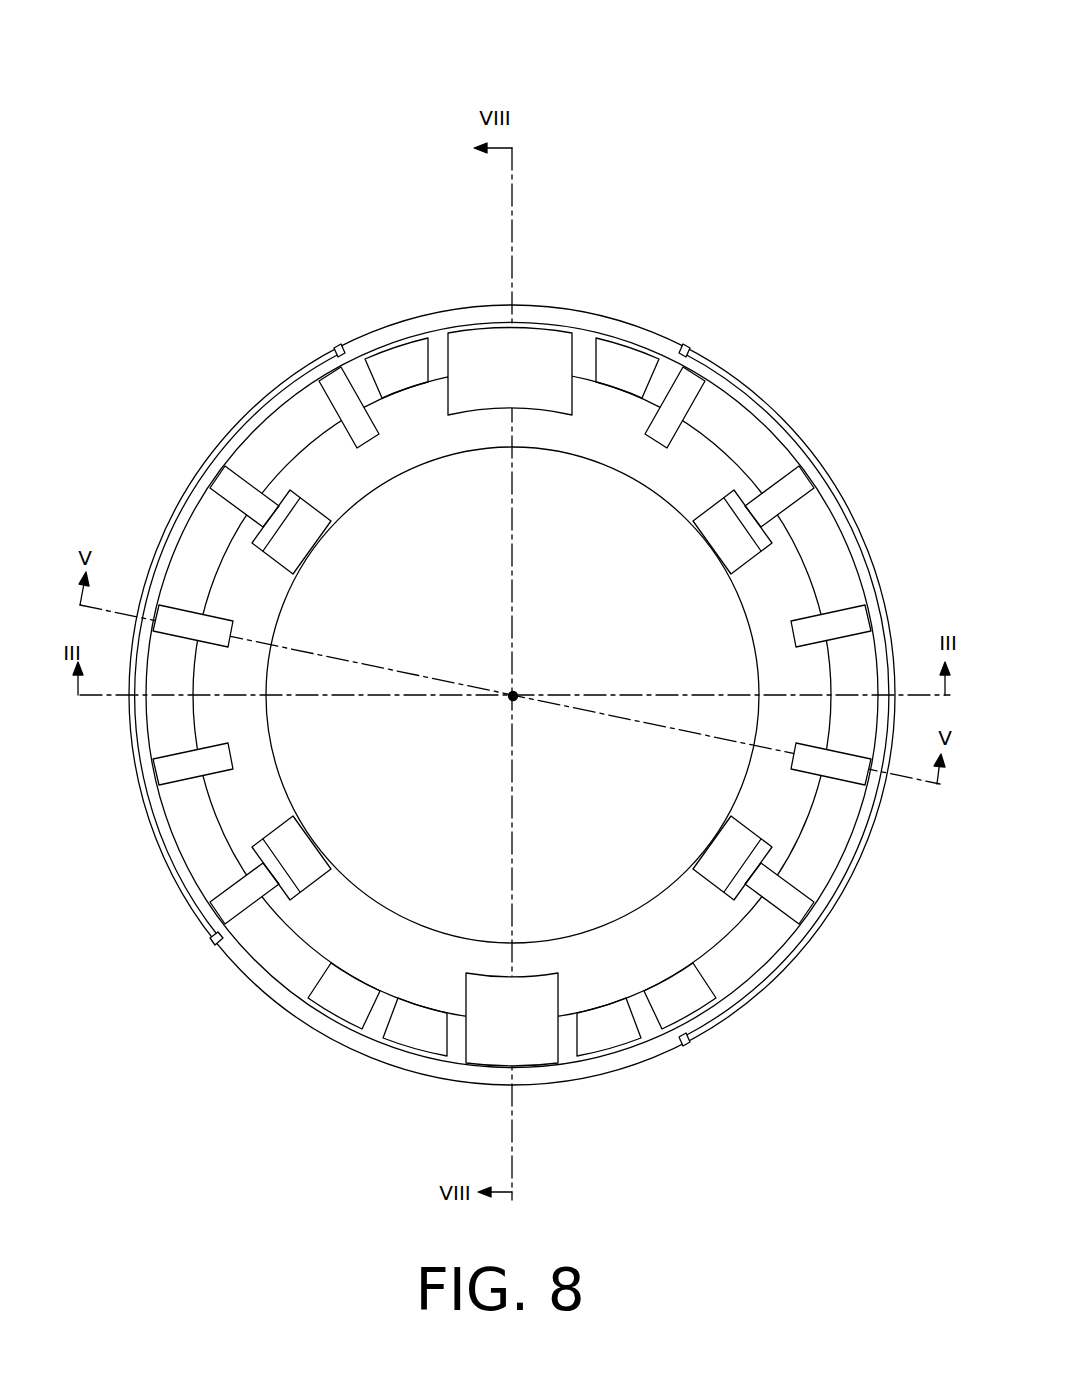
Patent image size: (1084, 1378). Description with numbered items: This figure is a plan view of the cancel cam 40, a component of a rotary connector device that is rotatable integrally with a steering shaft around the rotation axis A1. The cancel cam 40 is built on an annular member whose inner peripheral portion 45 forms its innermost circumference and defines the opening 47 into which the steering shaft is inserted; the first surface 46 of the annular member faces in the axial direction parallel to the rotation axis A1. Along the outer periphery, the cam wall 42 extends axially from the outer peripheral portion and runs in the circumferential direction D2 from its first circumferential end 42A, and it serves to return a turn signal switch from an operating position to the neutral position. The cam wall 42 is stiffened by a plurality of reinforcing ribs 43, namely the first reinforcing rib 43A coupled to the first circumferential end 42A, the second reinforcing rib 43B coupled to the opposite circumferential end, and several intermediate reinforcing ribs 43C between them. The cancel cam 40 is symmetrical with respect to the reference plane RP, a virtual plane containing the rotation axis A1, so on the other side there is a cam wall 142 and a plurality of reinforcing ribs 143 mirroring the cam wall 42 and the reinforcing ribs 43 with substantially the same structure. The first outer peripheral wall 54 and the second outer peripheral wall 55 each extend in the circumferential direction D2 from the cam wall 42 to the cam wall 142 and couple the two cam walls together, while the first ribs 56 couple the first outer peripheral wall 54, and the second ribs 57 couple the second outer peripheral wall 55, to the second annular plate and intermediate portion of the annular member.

The cancel cam 40 is at (648, 200).
The cam wall 42 is at (172, 512).
The first circumferential end 42A is at (336, 352).
The reinforcing rib 43 is at (221, 645).
The first reinforcing rib 43A is at (232, 936).
The second reinforcing rib 43B is at (350, 400).
The intermediate reinforcing rib 43C is at (95, 782).
The inner peripheral portion 45 is at (290, 808).
The first surface 46 is at (400, 930).
The opening 47 is at (422, 818).
The first outer peripheral wall 54 is at (400, 1070).
The second outer peripheral wall 55 is at (487, 318).
The first rib 56 is at (345, 1030).
The second rib 57 is at (440, 345).
The cam wall 142 is at (840, 490).
The reinforcing rib 143 is at (665, 385).
The rotation axis A1 is at (517, 699).
The reference plane RP is at (520, 206).
The circumferential direction D2 is at (574, 72).